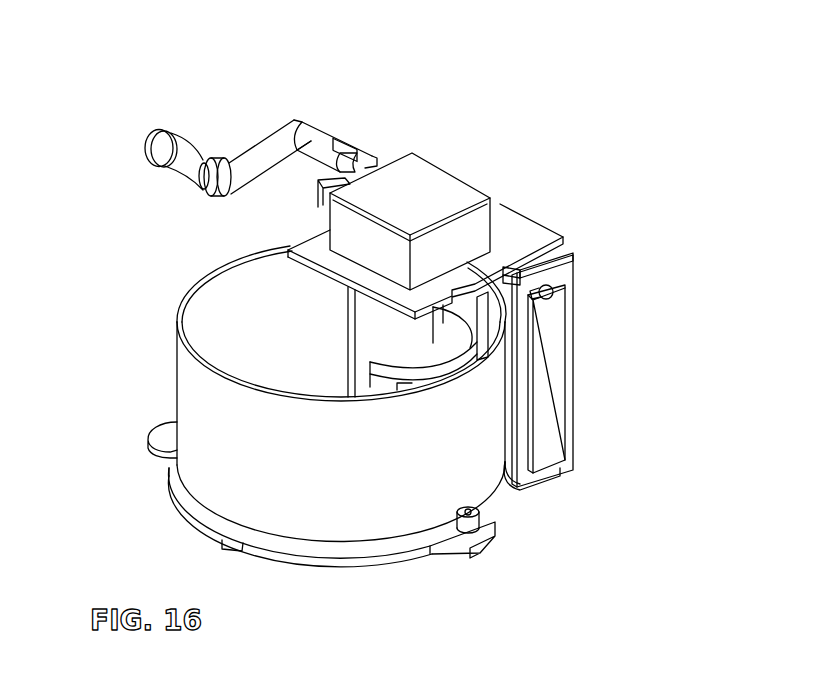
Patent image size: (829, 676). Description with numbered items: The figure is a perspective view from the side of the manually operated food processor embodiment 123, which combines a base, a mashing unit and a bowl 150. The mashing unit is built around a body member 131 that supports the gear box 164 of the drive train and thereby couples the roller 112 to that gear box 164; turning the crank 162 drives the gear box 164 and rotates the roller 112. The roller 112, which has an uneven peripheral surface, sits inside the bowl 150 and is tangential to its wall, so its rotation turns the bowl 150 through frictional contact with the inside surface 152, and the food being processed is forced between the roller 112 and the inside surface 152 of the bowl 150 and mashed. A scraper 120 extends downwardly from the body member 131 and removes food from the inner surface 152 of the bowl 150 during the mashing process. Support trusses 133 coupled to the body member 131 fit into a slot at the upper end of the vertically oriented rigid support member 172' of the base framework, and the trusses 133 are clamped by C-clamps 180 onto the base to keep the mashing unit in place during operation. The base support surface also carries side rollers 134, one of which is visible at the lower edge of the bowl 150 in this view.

The embodiment 123 is at (517, 46).
The crank 162 is at (170, 158).
The gear box 164 is at (522, 202).
The body member 131 is at (315, 248).
The inside surface 152 is at (292, 314).
The roller 112 is at (395, 377).
The scraper 120 is at (595, 259).
The bowl 150 is at (320, 460).
The side rollers 134 is at (482, 522).
The rigid support member 172' is at (625, 371).
The support trusses 133 is at (606, 239).
The C-clamps 180 is at (622, 271).